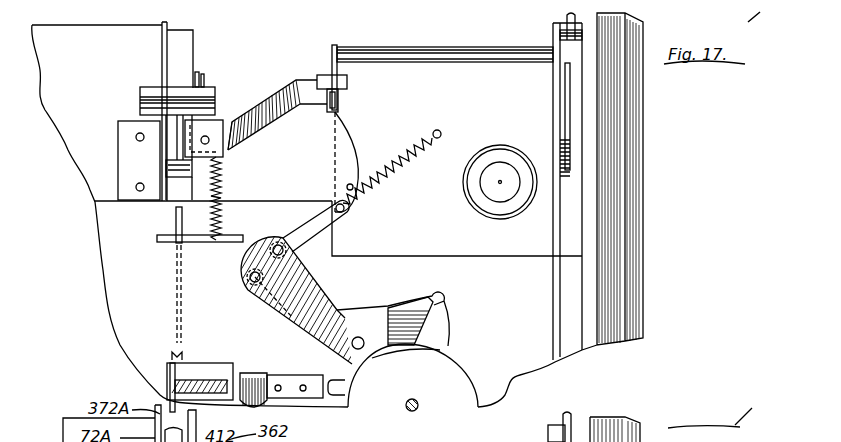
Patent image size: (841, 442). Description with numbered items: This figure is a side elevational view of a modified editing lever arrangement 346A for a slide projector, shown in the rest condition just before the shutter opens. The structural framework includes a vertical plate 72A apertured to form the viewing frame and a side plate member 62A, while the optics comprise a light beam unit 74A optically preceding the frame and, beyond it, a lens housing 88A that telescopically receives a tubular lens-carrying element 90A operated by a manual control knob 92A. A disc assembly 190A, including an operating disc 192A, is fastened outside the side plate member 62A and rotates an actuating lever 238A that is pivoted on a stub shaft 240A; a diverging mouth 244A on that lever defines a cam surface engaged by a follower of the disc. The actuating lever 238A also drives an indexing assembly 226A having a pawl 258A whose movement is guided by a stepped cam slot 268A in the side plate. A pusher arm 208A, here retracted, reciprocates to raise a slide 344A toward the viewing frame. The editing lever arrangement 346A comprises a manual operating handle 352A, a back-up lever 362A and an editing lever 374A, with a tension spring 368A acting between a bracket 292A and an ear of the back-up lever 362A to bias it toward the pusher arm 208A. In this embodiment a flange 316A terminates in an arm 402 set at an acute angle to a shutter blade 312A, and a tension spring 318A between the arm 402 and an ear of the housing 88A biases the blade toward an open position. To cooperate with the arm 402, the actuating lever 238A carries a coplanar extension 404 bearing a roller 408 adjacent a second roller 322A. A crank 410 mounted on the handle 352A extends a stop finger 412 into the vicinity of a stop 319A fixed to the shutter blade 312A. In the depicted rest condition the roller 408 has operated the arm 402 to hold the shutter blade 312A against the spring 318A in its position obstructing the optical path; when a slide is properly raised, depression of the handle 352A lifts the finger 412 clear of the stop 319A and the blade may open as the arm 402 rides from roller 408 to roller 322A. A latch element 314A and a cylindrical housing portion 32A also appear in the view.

The light beam unit 74A is at (92, 55).
The vertical plate 72A is at (160, 46).
The manual operating handle 352A is at (143, 103).
The editing lever 374A is at (197, 72).
The back-up lever 362A is at (205, 74).
The editing lever arrangement 346A is at (226, 92).
The crank 410 is at (248, 112).
The stop finger 412 is at (348, 82).
The shutter blade 312A is at (332, 50).
The housing 88A is at (533, 89).
The stop 319A is at (348, 100).
The latch 314A is at (345, 148).
The flange 316A is at (360, 172).
The tension spring 318A is at (420, 165).
The arm 402 is at (352, 216).
The roller 408 is at (285, 240).
The coplanar extension 404 is at (303, 272).
The side plate member 62A is at (392, 281).
The actuating lever 238A is at (398, 302).
The mouth 244A is at (432, 306).
The stub shaft 240A is at (366, 346).
The operating disc 192A is at (442, 364).
The indexing assembly 226A is at (322, 414).
The disc assembly 190A is at (488, 386).
The bracket 292A is at (163, 233).
The slide 344A is at (176, 273).
The pusher arm 208A is at (170, 360).
The roller 322A is at (256, 379).
The stepped cam slot 268A is at (255, 376).
The pawl 258A is at (240, 370).
The tension spring 368A is at (222, 198).
The cylinder 32A is at (648, 147).
The lens-carrying element 90A is at (568, 113).
The manual control knob 92A is at (545, 222).